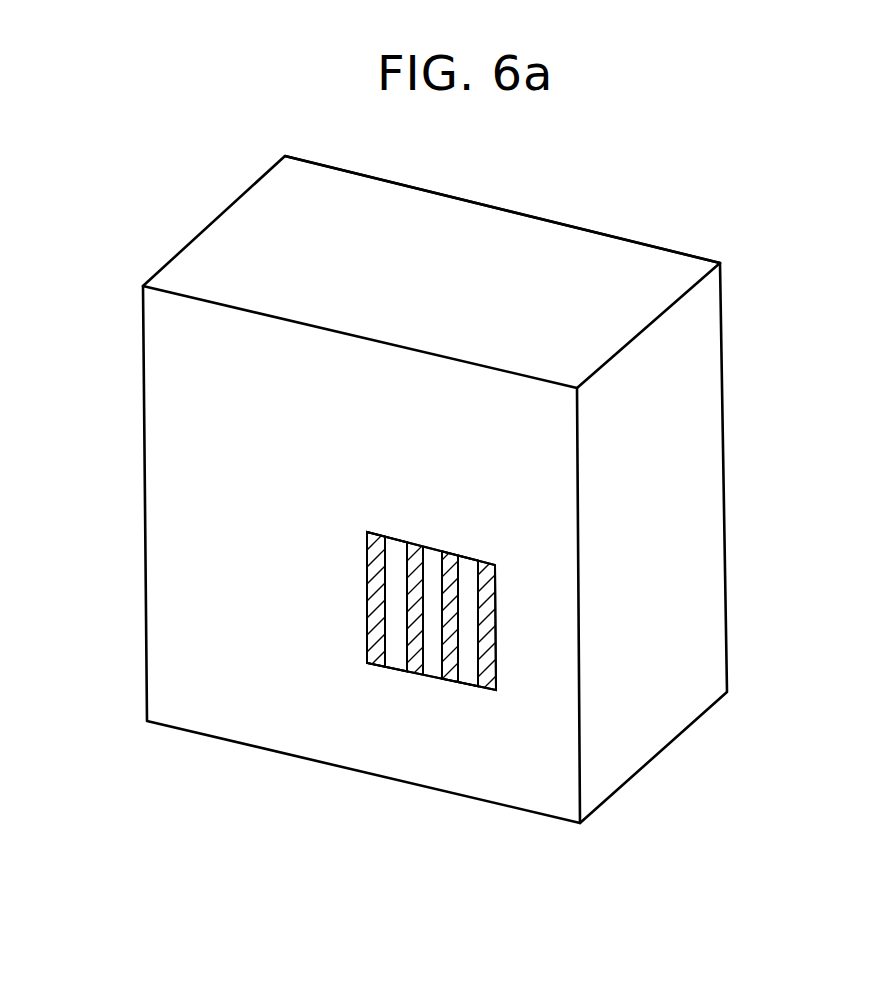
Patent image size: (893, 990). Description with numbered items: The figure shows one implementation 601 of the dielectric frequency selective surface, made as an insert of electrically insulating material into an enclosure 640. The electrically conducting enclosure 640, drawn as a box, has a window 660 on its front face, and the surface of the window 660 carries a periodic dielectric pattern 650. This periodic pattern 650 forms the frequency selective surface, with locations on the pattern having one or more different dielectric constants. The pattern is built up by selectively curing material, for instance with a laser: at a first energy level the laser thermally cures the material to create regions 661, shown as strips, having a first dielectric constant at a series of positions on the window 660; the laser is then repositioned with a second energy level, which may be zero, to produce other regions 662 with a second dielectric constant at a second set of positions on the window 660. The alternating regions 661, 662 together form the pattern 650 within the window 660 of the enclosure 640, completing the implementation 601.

The dielectric waveguide device 601 is at (196, 213).
The enclosure 640 is at (571, 234).
The periodic dielectric pattern 650 is at (405, 685).
The window 660 is at (482, 563).
The regions 661 is at (448, 675).
The regions 662 is at (470, 567).